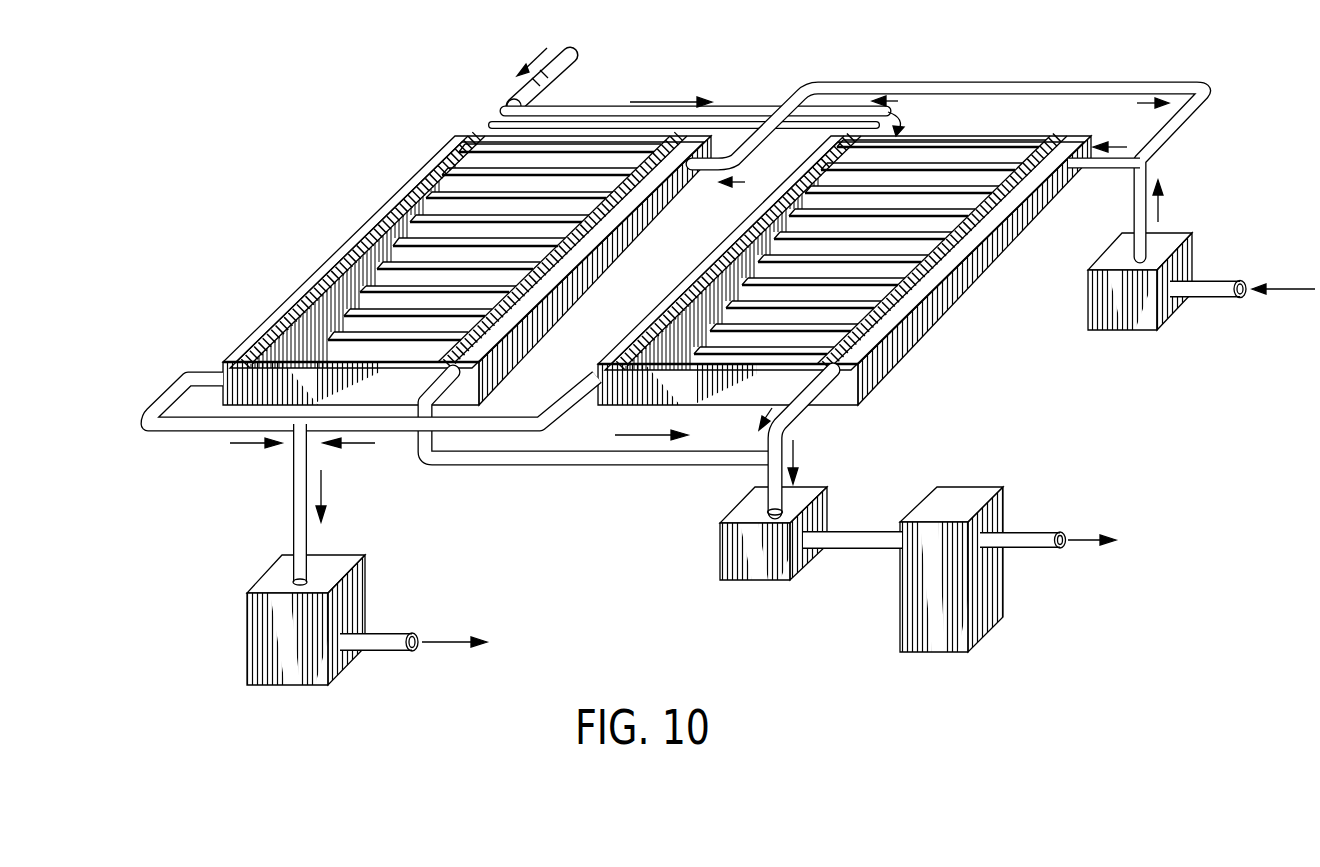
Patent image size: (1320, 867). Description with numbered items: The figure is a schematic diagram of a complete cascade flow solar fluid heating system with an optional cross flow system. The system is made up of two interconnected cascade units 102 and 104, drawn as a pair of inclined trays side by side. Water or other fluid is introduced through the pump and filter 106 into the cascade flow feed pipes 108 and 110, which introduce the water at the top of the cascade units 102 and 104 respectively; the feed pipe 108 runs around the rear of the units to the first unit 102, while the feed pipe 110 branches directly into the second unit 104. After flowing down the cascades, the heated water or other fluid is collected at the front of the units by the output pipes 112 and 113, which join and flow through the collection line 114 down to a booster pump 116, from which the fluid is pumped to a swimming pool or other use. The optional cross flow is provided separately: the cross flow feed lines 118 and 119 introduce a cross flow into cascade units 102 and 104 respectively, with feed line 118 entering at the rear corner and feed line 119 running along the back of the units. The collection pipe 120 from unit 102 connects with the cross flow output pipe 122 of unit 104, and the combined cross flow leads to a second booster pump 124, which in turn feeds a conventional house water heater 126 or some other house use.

The cascade unit 102 is at (455, 134).
The cascade unit 104 is at (983, 275).
The pump and filter 106 is at (1190, 255).
The cascade flow feed pipe 108 is at (1183, 120).
The cascade flow feed pipe 110 is at (1120, 165).
The output pipe 112 is at (405, 433).
The output pipe 113 is at (232, 432).
The collection line 114 is at (293, 470).
The booster pump 116 is at (247, 605).
The cross flow feed line 118 is at (575, 66).
The cross flow feed line 119 is at (600, 110).
The collection pipe 120 is at (588, 470).
The cross flow output pipe 122 is at (800, 423).
The booster pump 124 is at (830, 510).
The conventional house water heater 126 is at (1000, 505).